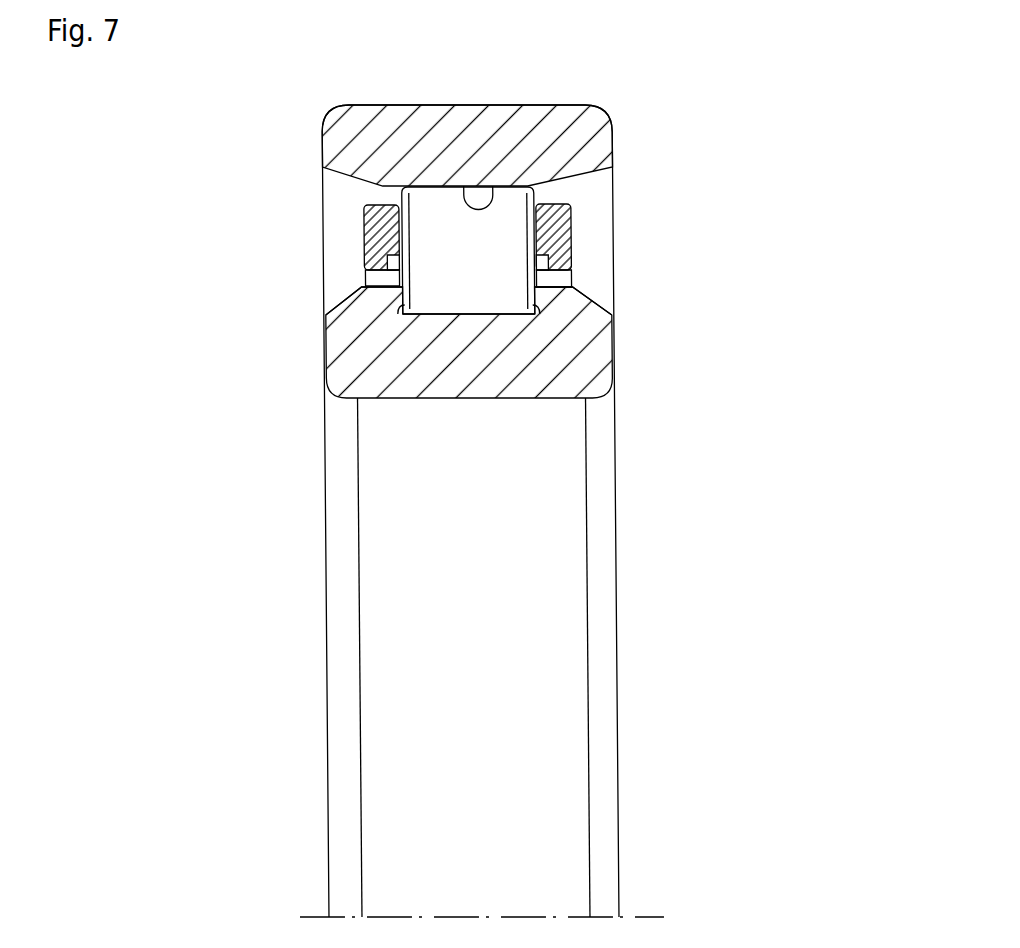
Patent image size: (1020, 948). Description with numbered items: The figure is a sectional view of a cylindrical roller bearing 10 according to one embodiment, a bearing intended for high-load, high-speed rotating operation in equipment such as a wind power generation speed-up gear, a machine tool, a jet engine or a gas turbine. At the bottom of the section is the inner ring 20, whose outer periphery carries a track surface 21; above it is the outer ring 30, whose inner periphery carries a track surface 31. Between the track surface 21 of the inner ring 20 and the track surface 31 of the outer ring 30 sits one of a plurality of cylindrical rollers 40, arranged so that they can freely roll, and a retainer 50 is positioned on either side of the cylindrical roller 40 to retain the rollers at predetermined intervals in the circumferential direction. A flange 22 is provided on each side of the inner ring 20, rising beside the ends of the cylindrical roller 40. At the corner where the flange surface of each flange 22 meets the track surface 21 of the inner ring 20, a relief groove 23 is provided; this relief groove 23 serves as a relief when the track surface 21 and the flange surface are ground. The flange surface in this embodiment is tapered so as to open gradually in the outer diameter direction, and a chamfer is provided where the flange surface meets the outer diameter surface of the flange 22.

The cylindrical roller bearing 10 is at (614, 98).
The inner ring 20 is at (503, 377).
The track surface 21 is at (463, 313).
The flange 22 is at (377, 300).
The relief groove 23 is at (397, 320).
The outer ring 30 is at (575, 143).
The track surface 31 is at (491, 193).
The cylindrical roller 40 is at (445, 205).
The retainer 50 is at (553, 216).